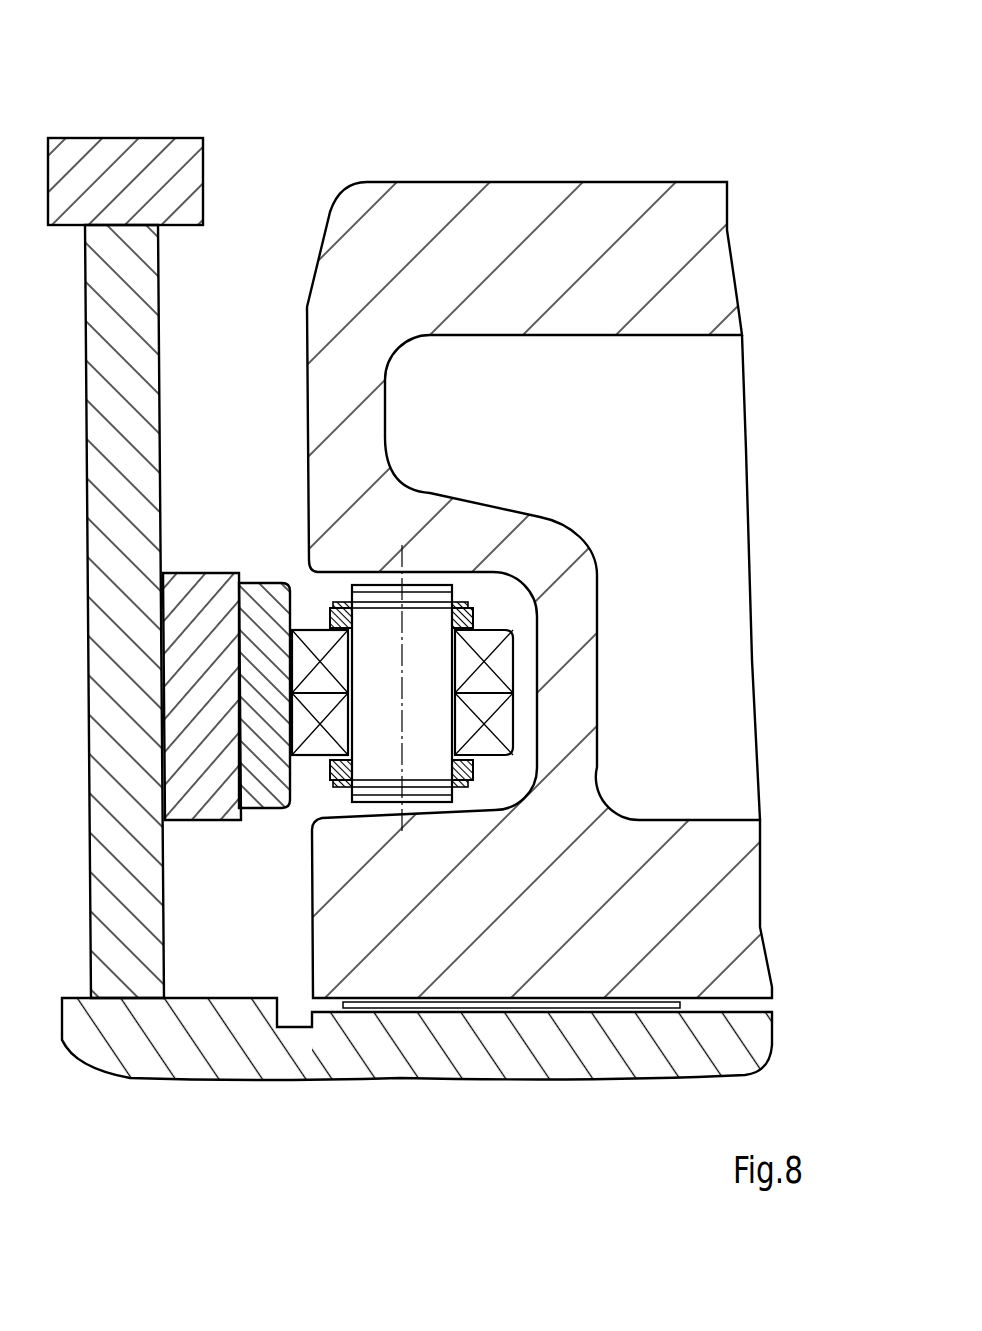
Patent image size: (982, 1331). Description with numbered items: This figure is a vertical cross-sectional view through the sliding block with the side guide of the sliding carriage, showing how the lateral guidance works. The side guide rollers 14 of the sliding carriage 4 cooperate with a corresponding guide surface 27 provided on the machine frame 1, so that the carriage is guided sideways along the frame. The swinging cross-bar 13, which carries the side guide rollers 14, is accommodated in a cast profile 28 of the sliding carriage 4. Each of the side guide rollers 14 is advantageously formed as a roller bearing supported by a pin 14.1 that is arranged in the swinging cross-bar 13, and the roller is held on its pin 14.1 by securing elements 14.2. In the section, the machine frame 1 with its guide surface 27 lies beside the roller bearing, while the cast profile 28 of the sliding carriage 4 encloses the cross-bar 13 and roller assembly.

The machine frame 1 is at (112, 275).
The sliding carriage 4 is at (595, 182).
The swinging cross-bar 13 is at (475, 619).
The side guide rollers 14 is at (495, 662).
The pins 14.1 is at (425, 707).
The securing elements 14.2 is at (475, 603).
The guide surface 27 is at (297, 803).
The cast profile 28 is at (307, 603).